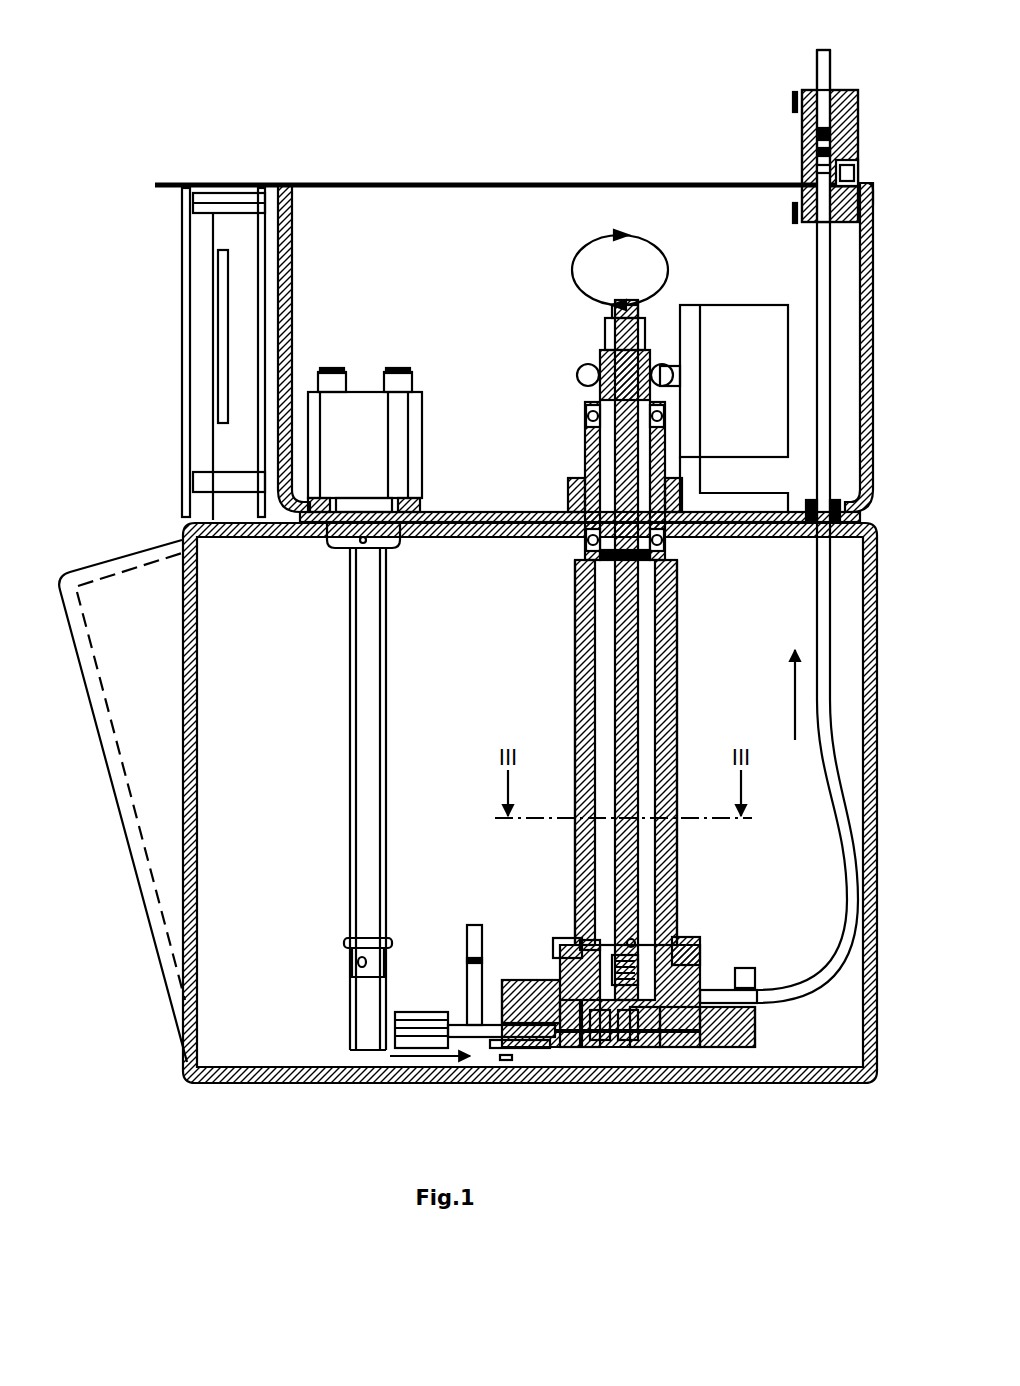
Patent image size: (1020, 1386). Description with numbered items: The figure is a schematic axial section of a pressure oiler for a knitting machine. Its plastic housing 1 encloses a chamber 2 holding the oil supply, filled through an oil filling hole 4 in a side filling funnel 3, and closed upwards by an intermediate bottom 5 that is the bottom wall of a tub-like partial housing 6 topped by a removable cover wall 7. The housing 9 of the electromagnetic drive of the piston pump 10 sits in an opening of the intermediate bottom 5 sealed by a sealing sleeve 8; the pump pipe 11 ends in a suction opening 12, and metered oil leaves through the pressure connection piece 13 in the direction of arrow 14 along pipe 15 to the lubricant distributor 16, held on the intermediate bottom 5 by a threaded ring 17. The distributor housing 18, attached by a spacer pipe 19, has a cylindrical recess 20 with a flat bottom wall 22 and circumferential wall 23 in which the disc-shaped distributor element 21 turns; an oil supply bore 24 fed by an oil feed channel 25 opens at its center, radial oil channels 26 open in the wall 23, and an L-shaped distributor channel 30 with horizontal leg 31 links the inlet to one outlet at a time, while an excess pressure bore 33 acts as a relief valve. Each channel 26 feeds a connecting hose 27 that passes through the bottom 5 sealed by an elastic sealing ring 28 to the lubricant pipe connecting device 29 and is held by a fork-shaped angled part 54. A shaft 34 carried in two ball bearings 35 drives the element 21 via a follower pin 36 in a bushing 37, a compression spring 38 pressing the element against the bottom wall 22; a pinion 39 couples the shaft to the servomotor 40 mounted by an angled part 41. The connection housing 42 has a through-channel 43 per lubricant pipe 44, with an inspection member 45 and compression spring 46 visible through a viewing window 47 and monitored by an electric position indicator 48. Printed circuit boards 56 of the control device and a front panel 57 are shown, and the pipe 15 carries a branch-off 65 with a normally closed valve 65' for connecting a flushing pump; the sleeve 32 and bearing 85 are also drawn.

The housing 1 is at (250, 1085).
The chamber 2 is at (205, 905).
The filling funnel 3 is at (100, 775).
The oil filling hole 4 is at (122, 548).
The intermediate bottom 5 is at (480, 512).
The partial housing 6 is at (298, 310).
The cover wall 7 is at (492, 183).
The sealing sleeve 8 is at (405, 522).
The housing of the electromagnetic drive 9 is at (405, 425).
The piston pump 10 is at (388, 692).
The pump pipe 11 is at (358, 772).
The suction opening 12 is at (385, 948).
The pressure connection piece 13 is at (388, 1050).
The arrow 14 is at (445, 1050).
The pipe 15 is at (500, 1050).
The lubricant distributor 16 is at (685, 680).
The threaded ring 17 is at (575, 495).
The distributor housing 18 is at (740, 1050).
The spacer pipe 19 is at (665, 610).
The cylindrical recess 20 is at (692, 1050).
The distributor element 21 is at (598, 1050).
The bottom wall 22 is at (625, 1050).
The cylindrical circumferential wall 23 is at (567, 1050).
The oil supply bore 24 is at (588, 1048).
The oil feed channel 25 is at (535, 985).
The radial oil channels 26 is at (720, 975).
The connecting hose 27 is at (848, 780).
The elastic sealing ring 28 is at (845, 510).
The lubricant pipe connecting device 29 is at (792, 112).
The distributor channel 30 is at (698, 965).
The horizontal leg 31 is at (640, 1050).
The sleeve 32 is at (590, 945).
The excess pressure bore 33 is at (650, 1050).
The shaft 34 is at (615, 648).
The ball bearings 35 is at (600, 410).
The follower pin 36 is at (657, 945).
The bushing 37 is at (575, 945).
The compression spring 38 is at (645, 950).
The pinion 39 is at (636, 350).
The servomotor 40 is at (735, 320).
The angled part 41 is at (735, 493).
The connection housing 42 is at (845, 110).
The through-channel 43 is at (830, 138).
The lubricant pipe 44 is at (832, 64).
The inspection member 45 is at (815, 170).
The compression spring 46 is at (815, 150).
The viewing window 47 is at (846, 172).
The electric position indicator 48 is at (850, 180).
The angled part 54 is at (798, 95).
The printed circuit boards 56 is at (222, 360).
The front panel 57 is at (183, 310).
The pipe branch-off 65 is at (454, 925).
The valve 65' is at (447, 963).
The bearing 85 is at (583, 545).